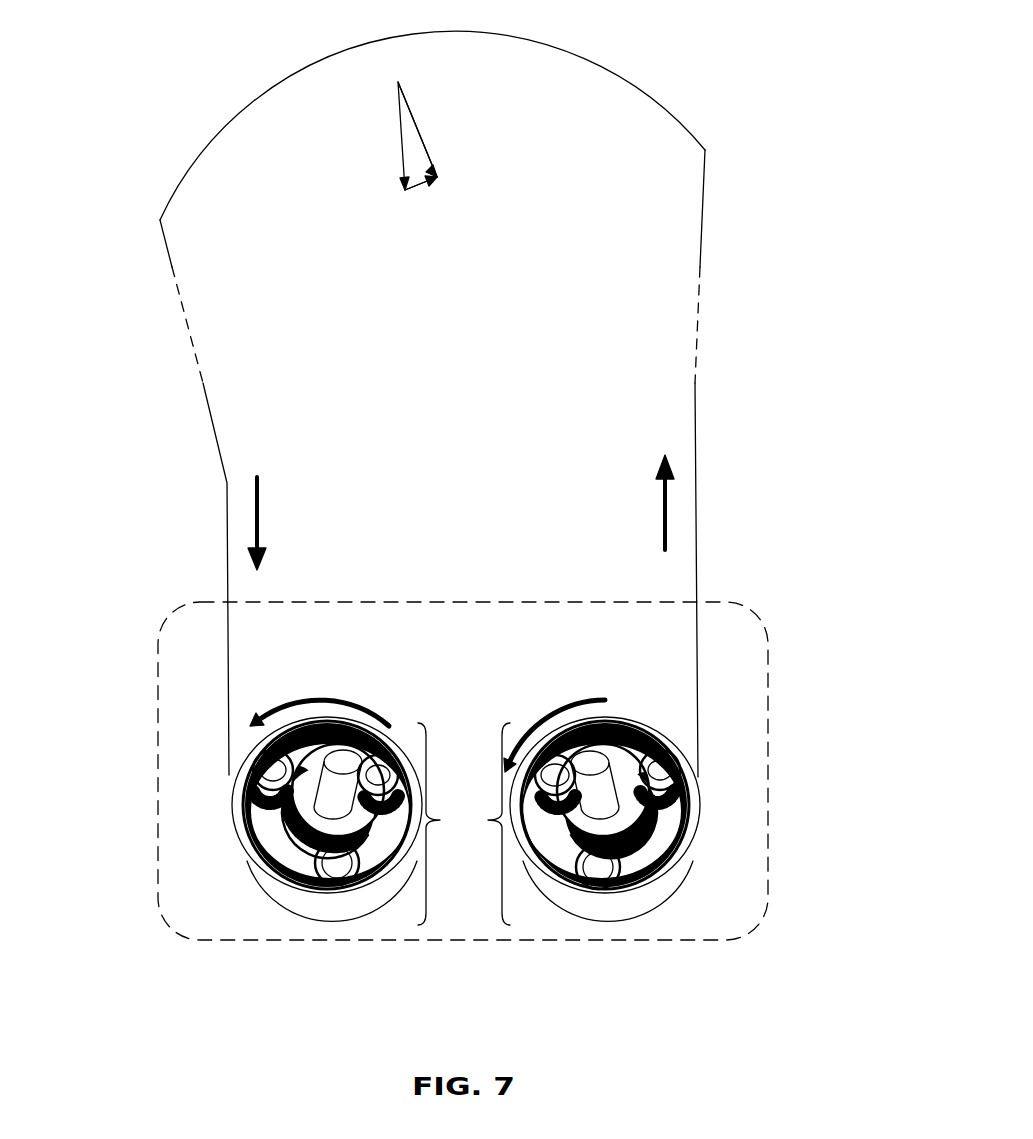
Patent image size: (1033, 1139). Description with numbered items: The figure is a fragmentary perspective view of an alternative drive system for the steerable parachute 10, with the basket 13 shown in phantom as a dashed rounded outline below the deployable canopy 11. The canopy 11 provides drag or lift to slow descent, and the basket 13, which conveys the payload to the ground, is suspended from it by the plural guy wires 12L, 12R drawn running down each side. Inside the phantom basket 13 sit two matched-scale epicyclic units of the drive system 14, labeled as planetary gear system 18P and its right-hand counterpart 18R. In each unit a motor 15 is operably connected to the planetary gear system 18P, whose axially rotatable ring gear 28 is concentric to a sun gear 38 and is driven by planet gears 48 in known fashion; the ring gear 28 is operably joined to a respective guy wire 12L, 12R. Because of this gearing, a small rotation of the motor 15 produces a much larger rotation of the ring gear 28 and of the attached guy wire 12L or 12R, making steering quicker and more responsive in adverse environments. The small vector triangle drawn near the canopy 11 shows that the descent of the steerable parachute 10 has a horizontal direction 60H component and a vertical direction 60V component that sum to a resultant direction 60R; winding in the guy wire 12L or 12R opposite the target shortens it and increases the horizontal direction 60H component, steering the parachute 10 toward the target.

The steerable parachute 10 is at (142, 382).
The deployable canopy 11 is at (653, 100).
The left guy wire 12L is at (227, 512).
The right guy wire 12R is at (695, 460).
The basket 13 is at (158, 805).
The drive system 14 is at (464, 824).
The motor 15 is at (348, 763).
The right-hand planetary gear set 18R is at (468, 768).
The planetary gear system 18P is at (559, 650).
The ring gear 28 is at (265, 877).
The sun gear 38 is at (307, 805).
The planet gears 48 is at (260, 757).
The vertical direction 60V is at (402, 168).
The resultant direction 60R is at (423, 140).
The horizontal direction 60H is at (418, 188).